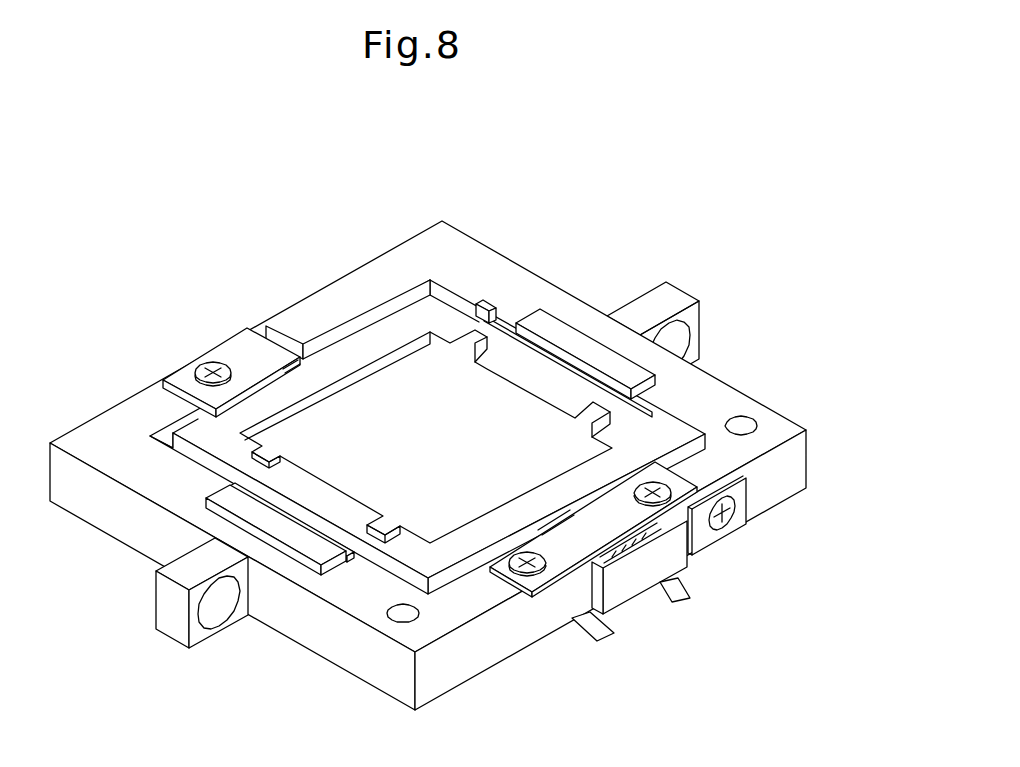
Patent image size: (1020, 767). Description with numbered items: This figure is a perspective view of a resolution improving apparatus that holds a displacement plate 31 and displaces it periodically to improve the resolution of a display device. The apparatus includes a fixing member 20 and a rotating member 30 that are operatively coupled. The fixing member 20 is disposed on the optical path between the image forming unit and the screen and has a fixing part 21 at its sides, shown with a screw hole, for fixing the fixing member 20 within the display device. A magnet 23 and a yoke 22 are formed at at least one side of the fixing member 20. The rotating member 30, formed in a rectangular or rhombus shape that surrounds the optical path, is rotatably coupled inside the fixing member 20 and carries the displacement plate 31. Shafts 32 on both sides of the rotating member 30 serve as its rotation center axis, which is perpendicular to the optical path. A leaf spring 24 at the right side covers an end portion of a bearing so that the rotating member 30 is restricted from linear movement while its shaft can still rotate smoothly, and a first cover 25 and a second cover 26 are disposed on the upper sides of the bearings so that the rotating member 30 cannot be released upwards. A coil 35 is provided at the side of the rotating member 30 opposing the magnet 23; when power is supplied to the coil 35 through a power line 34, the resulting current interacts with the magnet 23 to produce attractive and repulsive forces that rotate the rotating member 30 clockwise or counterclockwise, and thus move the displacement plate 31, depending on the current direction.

The fixing member 20 is at (798, 468).
The fixing part 21 is at (672, 296).
The yoke 22 is at (553, 323).
The magnet 23 is at (585, 357).
The leaf spring 24 is at (612, 587).
The first cover 25 is at (602, 525).
The second cover 26 is at (230, 336).
The rotating member 30 is at (207, 433).
The displacement plate 31 is at (402, 397).
The shafts 32 is at (705, 540).
The power line 34 is at (690, 584).
The coil 35 is at (485, 305).